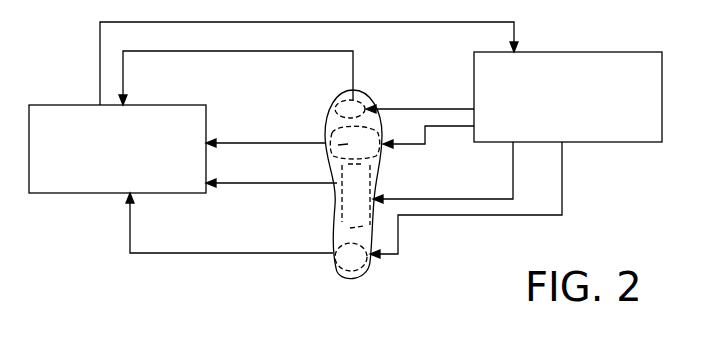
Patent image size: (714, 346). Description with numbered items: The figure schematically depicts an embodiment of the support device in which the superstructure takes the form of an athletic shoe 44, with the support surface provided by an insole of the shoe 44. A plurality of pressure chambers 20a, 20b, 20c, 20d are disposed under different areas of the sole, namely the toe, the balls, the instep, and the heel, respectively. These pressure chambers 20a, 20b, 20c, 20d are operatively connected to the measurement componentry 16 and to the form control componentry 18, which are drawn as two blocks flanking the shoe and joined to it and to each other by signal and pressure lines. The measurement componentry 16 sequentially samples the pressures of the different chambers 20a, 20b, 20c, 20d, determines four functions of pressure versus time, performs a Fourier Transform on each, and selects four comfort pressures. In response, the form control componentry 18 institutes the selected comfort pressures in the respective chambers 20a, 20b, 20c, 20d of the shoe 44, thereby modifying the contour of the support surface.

The measurement componentry 16 is at (82, 104).
The form control componentry 18 is at (592, 52).
The pressure chamber 20a is at (328, 103).
The pressure chamber 20b is at (328, 150).
The pressure chamber 20c is at (335, 218).
The pressure chamber 20d is at (333, 274).
The athletic shoe 44 is at (372, 268).